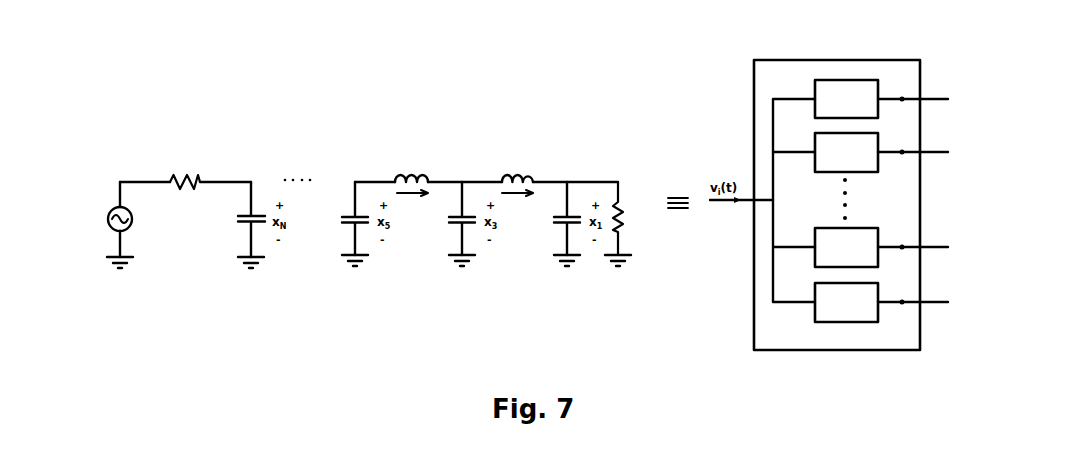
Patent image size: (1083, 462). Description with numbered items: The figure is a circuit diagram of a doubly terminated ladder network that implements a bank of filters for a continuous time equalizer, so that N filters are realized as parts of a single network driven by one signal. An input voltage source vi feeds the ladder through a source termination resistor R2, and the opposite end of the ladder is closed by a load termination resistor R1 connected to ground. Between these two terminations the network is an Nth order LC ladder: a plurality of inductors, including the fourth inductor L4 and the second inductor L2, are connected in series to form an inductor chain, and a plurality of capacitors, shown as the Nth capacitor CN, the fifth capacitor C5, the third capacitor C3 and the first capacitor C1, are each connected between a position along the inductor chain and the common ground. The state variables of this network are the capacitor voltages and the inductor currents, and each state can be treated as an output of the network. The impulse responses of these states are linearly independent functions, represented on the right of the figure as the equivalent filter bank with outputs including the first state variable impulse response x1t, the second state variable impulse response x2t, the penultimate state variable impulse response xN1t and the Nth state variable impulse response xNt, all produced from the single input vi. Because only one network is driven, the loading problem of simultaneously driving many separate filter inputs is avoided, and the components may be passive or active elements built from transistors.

The source termination resistor R2 is at (185, 174).
The load termination resistor R1 is at (626, 224).
The Nth capacitor CN is at (241, 225).
The fifth capacitor C5 is at (346, 224).
The third capacitor C3 is at (453, 224).
The first capacitor C1 is at (558, 224).
The fourth inductor L4 is at (411, 185).
The second inductor L2 is at (517, 185).
The input voltage source vi is at (134, 225).
The first state variable impulse response x1t is at (881, 99).
The second state variable impulse response x2t is at (881, 152).
The (N-1)th state variable impulse response xN1t is at (881, 247).
The Nth state variable impulse response xNt is at (881, 302).